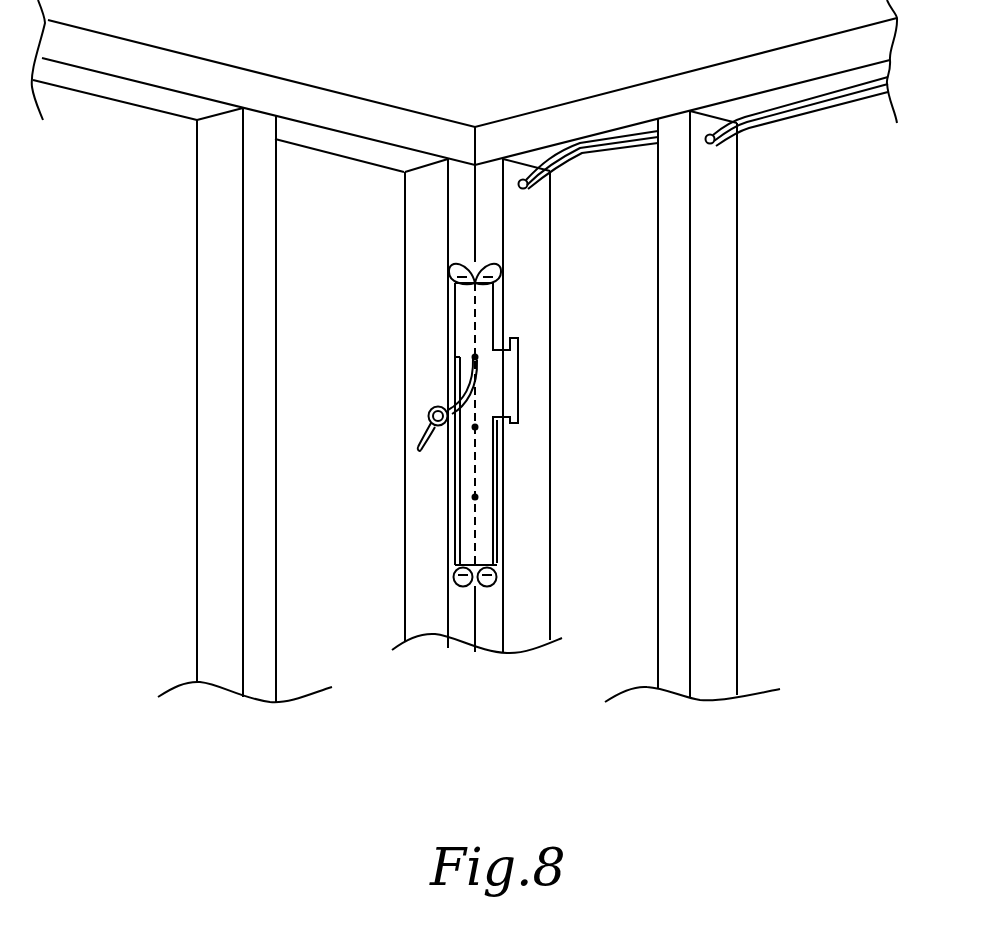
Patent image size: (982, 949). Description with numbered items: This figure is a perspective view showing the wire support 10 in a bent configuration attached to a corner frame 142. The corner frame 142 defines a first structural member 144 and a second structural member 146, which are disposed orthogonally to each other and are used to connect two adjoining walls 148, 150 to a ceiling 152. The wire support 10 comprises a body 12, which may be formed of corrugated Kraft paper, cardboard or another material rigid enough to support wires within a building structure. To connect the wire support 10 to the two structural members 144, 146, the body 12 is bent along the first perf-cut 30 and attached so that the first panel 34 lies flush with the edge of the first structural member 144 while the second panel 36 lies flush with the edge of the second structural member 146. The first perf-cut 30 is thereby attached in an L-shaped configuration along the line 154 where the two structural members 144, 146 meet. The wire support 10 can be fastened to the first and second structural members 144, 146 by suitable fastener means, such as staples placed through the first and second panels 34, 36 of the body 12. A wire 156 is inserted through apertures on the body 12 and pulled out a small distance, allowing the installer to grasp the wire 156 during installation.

The wire support 10 is at (437, 315).
The body 12 is at (518, 529).
The first perf-cut 30 is at (464, 531).
The first panel 34 is at (463, 478).
The second panel 36 is at (487, 472).
The corner frame 142 is at (566, 251).
The first structural member 144 is at (424, 609).
The second structural member 146 is at (521, 604).
The wall 148 is at (306, 250).
The wall 150 is at (636, 221).
The ceiling 152 is at (447, 85).
The line 154 is at (478, 192).
The wire 156 is at (428, 408).